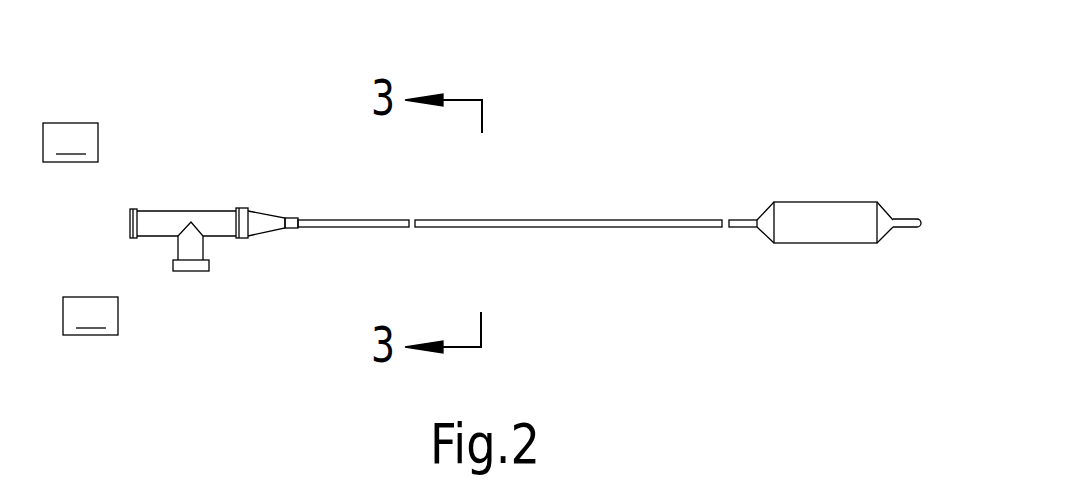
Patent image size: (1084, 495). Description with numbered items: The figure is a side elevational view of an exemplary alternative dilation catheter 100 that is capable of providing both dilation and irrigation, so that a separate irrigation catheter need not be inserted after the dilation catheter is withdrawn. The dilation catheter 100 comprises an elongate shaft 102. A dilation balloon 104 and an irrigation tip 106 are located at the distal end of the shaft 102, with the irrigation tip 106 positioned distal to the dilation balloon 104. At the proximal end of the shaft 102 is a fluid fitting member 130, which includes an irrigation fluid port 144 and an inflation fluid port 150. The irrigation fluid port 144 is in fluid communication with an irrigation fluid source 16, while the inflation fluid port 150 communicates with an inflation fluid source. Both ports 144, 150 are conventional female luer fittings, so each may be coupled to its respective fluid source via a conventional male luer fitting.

The dilation catheter 100 is at (607, 80).
The shaft 102 is at (371, 228).
The dilation balloon 104 is at (817, 202).
The irrigation tip 106 is at (913, 219).
The fluid fitting member 130 is at (191, 142).
The irrigation fluid port 144 is at (133, 238).
The inflation fluid port 150 is at (205, 271).
The irrigation fluid source 16 is at (70, 162).